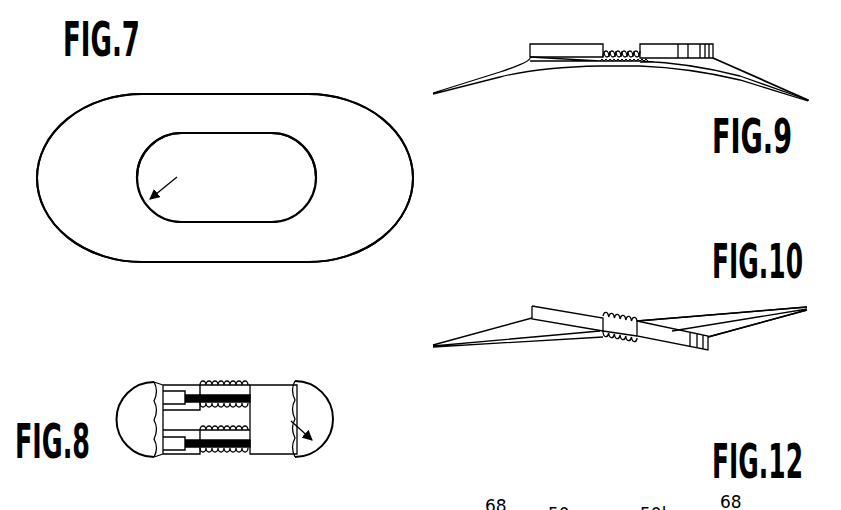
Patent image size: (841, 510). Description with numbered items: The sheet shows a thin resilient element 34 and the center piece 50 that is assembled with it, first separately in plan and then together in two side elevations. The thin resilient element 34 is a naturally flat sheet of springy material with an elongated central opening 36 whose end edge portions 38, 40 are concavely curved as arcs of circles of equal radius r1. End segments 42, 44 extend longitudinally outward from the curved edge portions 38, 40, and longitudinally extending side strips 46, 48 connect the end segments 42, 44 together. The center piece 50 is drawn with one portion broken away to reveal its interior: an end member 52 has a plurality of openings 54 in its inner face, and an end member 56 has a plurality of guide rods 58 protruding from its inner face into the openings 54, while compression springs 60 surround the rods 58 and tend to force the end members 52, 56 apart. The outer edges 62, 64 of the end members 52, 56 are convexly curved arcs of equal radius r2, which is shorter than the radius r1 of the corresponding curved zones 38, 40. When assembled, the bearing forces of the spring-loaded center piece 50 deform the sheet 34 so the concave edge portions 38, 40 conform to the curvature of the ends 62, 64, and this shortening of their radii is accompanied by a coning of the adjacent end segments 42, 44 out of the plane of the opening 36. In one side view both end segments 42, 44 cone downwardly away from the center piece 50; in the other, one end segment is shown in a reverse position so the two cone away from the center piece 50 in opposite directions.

In FIG. 7, the thin resilient element 34 is at (302, 110).
In FIG. 9, the thin resilient element 34 is at (521, 57).
In FIG. 10, the thin resilient element 34 is at (510, 316).
In FIG. 7, the central opening 36 is at (234, 146).
In FIG. 7, the end edge portion 38 is at (147, 161).
In FIG. 7, the end edge portion 40 is at (316, 177).
In FIG. 7, the end segment 42 is at (74, 140).
In FIG. 9, the end segment 42 is at (486, 75).
In FIG. 10, the end segment 42 is at (479, 335).
In FIG. 7, the end segment 44 is at (393, 197).
In FIG. 9, the end segment 44 is at (750, 72).
In FIG. 10, the end segment 44 is at (766, 323).
In FIG. 7, the side strip 46 is at (200, 104).
In FIG. 9, the side strip 46 is at (626, 62).
In FIG. 7, the side strip 48 is at (230, 262).
In FIG. 7, the radius of curvature of the opening end edges r1 is at (163, 187).
In FIG. 8, the center piece 50 is at (284, 453).
In FIG. 9, the center piece 50 is at (594, 43).
In FIG. 10, the center piece 50 is at (655, 346).
In FIG. 8, the end member 52 is at (165, 380).
In FIG. 8, the openings 54 is at (183, 390).
In FIG. 8, the end member 56 is at (301, 380).
In FIG. 8, the guide rods 58 is at (248, 394).
In FIG. 8, the compression springs 60 is at (217, 384).
In FIG. 8, the outer edge 62 is at (128, 394).
In FIG. 8, the outer edge 64 is at (322, 417).
In FIG. 8, the radius of curvature of the end member edges r2 is at (313, 440).